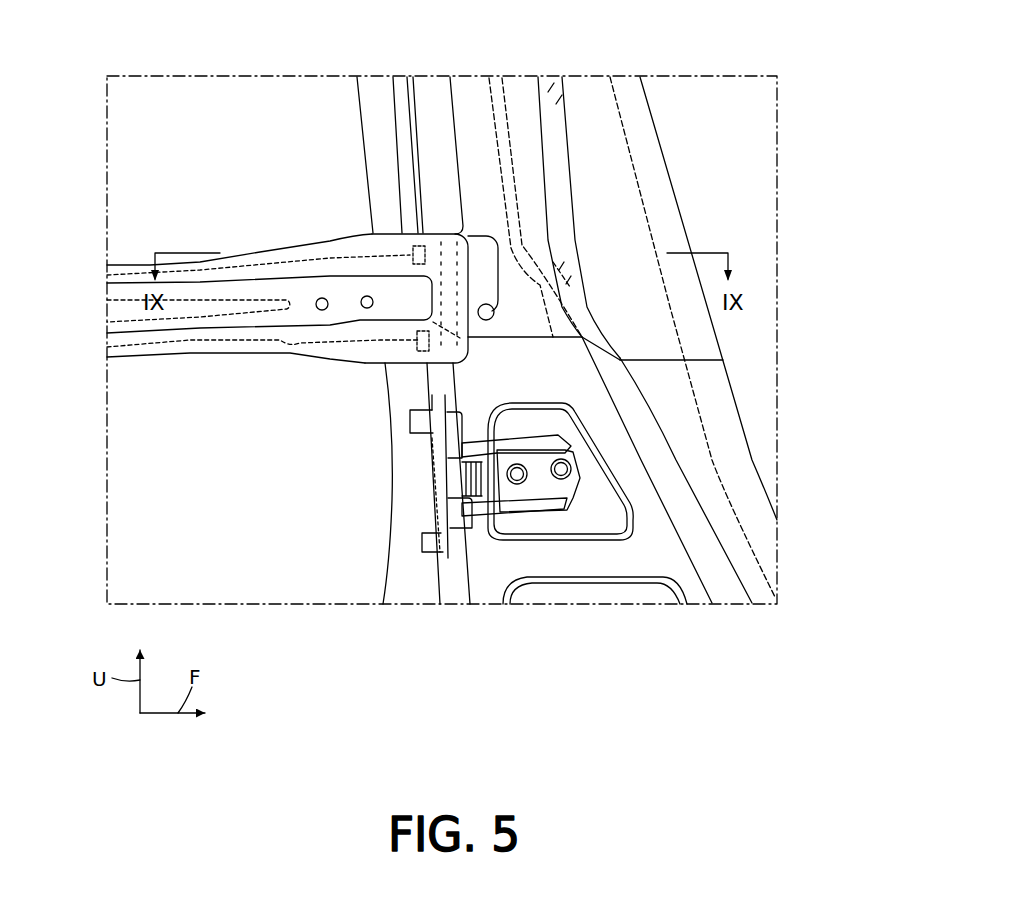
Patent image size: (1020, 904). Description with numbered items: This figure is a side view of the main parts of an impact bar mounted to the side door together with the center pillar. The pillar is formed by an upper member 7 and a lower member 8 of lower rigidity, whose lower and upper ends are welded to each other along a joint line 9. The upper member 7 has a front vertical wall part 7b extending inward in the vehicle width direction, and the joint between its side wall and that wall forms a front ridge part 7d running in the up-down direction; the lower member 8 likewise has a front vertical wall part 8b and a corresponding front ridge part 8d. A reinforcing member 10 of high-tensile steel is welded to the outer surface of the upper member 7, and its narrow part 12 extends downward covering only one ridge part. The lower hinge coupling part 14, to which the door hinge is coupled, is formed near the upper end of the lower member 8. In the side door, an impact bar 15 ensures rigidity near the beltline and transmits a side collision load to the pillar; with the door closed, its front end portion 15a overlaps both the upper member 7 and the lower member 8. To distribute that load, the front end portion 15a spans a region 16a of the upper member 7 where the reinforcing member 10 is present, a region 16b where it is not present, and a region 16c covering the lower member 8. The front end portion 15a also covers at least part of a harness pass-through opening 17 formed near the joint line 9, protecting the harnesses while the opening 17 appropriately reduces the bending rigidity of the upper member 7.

The upper member 7 is at (652, 106).
The front vertical wall part 7b is at (562, 203).
The front ridge part 7d is at (545, 157).
The lower member 8 is at (732, 380).
The front vertical wall part 8b is at (697, 527).
The front ridge part 8d is at (697, 580).
The joint line 9 is at (552, 337).
The reinforcing member 10 is at (471, 178).
The narrow part 12 is at (457, 145).
The lower hinge coupling part 14 is at (573, 441).
The impact bar 15 is at (192, 355).
The front end portion 15a is at (361, 301).
The region of the upper member in which the reinforcing member is present 16a is at (418, 240).
The region of the upper member in which the reinforcing member is not present 16b is at (437, 312).
The region covering the lower member 16c is at (445, 352).
The harness pass-through opening 17 is at (483, 320).